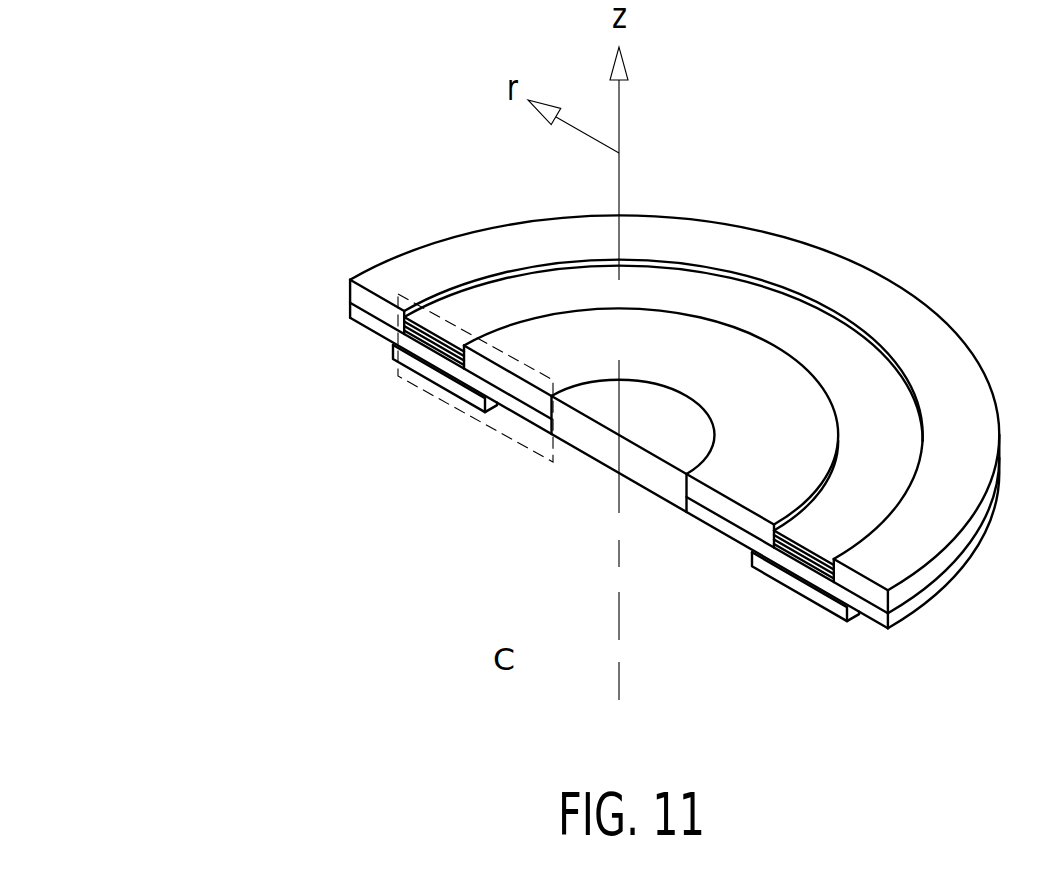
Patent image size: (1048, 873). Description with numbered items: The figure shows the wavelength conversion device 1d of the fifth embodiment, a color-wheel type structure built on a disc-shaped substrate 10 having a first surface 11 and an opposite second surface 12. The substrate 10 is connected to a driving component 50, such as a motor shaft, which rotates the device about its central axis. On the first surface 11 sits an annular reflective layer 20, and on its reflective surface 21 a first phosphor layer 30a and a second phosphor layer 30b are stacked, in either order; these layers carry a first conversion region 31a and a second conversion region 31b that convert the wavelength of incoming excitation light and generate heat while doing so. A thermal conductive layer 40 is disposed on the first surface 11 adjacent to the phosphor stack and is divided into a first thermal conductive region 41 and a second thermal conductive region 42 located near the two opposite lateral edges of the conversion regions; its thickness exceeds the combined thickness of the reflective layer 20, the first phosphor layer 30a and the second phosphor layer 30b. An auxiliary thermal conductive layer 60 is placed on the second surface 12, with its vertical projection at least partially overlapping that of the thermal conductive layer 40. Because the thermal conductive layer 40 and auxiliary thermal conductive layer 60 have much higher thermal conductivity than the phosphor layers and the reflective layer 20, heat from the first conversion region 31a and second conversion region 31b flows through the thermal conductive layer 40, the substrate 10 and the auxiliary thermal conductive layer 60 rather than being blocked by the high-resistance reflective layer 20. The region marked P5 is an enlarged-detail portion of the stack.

The wavelength conversion device 1d is at (59, 100).
The substrate 10 is at (380, 332).
The first surface 11 is at (362, 307).
The second surface 12 is at (358, 323).
The reflective layer 20 is at (440, 356).
The reflective surface 21 is at (453, 363).
The first phosphor layer 30a is at (443, 323).
The second phosphor layer 30b is at (410, 333).
The first conversion region 31a is at (550, 290).
The second conversion region 31b is at (460, 320).
The thermal conductive layer 40 is at (747, 337).
The first thermal conductive region 41 is at (795, 412).
The second thermal conductive region 42 is at (725, 234).
The driving component 50 is at (625, 494).
The auxiliary thermal conductive layer 60 is at (492, 412).
The sensing region P5 is at (478, 421).